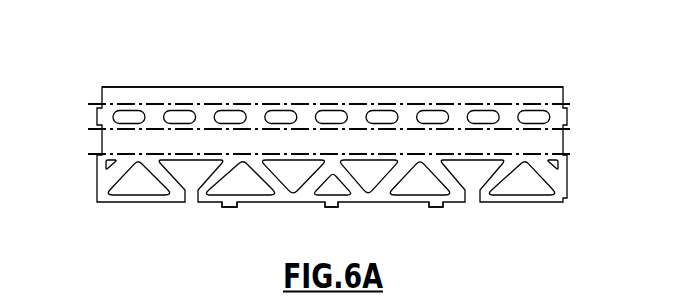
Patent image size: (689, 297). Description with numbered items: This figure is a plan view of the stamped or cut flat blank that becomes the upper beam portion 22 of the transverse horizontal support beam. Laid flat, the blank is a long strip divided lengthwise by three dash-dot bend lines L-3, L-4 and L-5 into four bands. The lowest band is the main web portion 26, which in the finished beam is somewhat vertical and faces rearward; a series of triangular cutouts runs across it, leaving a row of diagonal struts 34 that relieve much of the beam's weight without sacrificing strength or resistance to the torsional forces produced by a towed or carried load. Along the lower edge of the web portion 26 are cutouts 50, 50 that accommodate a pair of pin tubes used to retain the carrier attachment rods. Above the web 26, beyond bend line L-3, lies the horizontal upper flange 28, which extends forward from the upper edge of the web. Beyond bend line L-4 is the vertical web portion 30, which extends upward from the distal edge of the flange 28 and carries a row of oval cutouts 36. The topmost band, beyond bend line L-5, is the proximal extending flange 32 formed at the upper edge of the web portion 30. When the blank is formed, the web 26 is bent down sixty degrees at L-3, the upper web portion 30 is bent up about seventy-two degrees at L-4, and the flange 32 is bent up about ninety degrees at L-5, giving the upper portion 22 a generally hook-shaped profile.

The upper beam portion 22 is at (471, 63).
The main web portion 26 is at (567, 176).
The horizontal upper flange 28 is at (567, 138).
The vertical web portion 30 is at (567, 117).
The proximal extending flange 32 is at (563, 90).
The diagonal struts 34 is at (160, 184).
The oval cutouts 36 is at (327, 108).
The cutouts 50 is at (192, 204).
The bend line L-3 is at (95, 155).
The bend line L-4 is at (98, 130).
The bend line L-5 is at (100, 103).